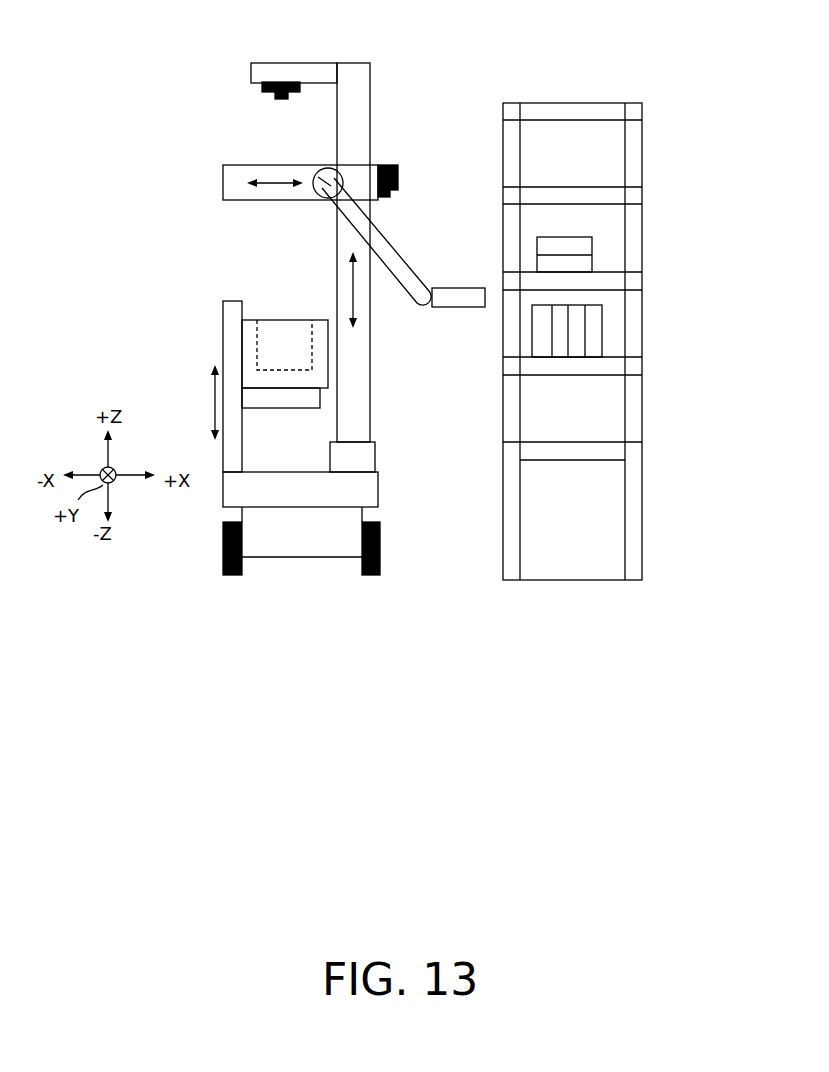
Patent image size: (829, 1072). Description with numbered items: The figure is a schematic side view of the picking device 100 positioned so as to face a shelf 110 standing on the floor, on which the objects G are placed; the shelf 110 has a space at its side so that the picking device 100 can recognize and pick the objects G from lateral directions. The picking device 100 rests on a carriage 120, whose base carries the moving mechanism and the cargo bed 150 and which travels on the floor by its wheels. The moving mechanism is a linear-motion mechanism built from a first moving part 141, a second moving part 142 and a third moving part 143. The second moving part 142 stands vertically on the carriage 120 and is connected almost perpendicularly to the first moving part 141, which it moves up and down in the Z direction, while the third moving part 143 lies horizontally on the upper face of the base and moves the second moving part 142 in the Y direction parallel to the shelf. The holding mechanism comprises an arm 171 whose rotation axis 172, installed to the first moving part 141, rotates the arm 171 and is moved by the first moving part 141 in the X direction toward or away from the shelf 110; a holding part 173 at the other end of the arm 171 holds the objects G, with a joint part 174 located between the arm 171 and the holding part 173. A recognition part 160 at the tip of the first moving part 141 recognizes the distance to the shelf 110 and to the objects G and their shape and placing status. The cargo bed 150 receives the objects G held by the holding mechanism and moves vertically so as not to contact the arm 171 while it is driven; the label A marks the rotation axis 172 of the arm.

The picking device 100 is at (400, 62).
The shelf 110 is at (643, 103).
The carriage 120 is at (399, 494).
The first moving part 141 is at (230, 175).
The second moving part 142 is at (352, 142).
The third moving part 143 is at (357, 458).
The cargo bed 150 is at (231, 290).
The recognition part 160 is at (273, 98).
The arm 171 is at (330, 200).
The rotation axis 172 is at (313, 197).
The holding part 173 is at (463, 300).
The joint part 174 is at (433, 287).
The rotation axis A is at (333, 170).
The objects G is at (595, 327).